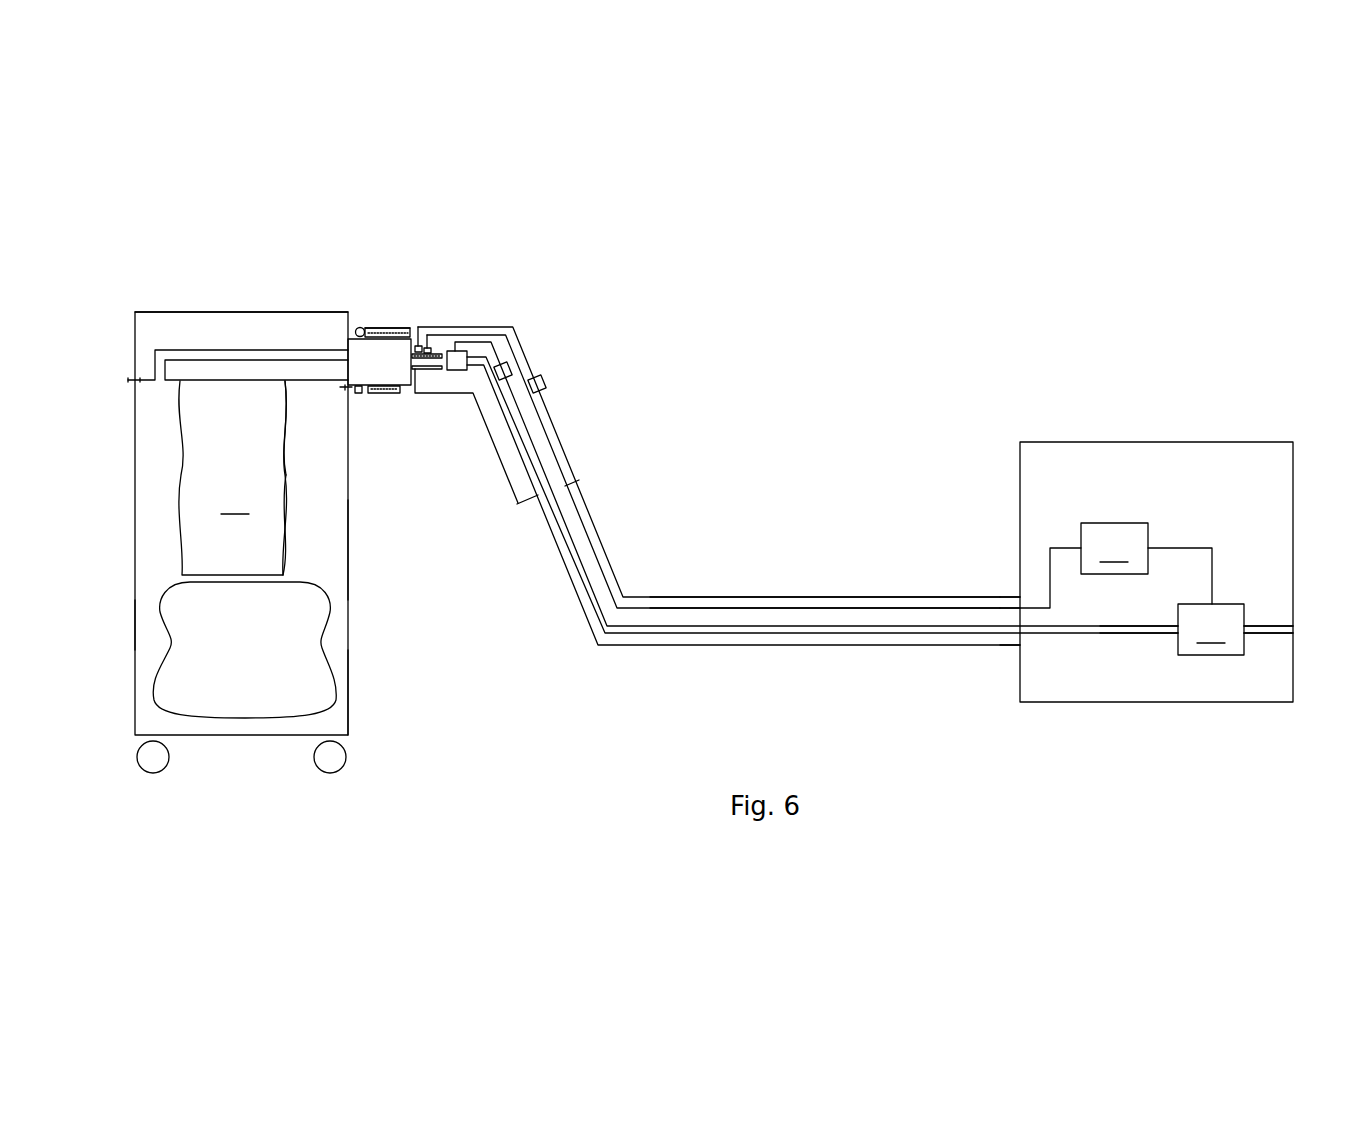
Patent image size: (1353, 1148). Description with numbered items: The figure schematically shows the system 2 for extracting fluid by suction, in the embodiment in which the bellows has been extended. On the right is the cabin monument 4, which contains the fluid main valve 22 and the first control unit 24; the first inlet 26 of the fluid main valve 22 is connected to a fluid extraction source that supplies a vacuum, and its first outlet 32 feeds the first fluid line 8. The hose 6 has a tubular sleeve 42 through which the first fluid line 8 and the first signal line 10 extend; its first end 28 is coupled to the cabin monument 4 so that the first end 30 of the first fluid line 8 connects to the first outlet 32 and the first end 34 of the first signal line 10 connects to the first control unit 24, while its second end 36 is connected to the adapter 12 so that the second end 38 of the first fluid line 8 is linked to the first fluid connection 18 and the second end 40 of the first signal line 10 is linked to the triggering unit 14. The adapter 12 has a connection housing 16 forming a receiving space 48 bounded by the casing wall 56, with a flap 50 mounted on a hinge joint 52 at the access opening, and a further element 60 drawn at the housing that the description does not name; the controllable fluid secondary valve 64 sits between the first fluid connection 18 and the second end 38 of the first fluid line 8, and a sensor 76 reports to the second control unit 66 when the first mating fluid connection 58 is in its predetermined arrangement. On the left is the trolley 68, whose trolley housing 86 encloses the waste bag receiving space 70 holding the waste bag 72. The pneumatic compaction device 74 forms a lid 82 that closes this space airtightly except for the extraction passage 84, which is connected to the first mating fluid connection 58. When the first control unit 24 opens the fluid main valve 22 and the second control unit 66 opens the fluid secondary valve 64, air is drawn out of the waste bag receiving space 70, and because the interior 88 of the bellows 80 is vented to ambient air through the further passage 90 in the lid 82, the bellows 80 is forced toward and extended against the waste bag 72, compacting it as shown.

The system 2 is at (1006, 248).
The cabin monument 4 is at (1258, 402).
The hose 6 is at (784, 580).
The first fluid line 8 is at (780, 636).
The first signal line 10 is at (822, 600).
The adapter 12 is at (519, 290).
The triggering unit 14 is at (544, 376).
The connection housing 16 is at (411, 328).
The first fluid connection 18 is at (416, 372).
The fluid main valve 22 is at (1211, 629).
The first control unit 24 is at (1114, 548).
The first inlet 26 is at (1249, 615).
The first end of the hose 28 is at (1014, 590).
The first end of the first fluid line 30 is at (1013, 642).
The first outlet 32 is at (1174, 637).
The first end of the first signal line 34 is at (1014, 612).
The second end of the hose 36 is at (587, 484).
The second end of the first fluid line 38 is at (521, 505).
The second end of the first signal line 40 is at (543, 488).
The tubular sleeve 42 is at (724, 590).
The receiving space 48 is at (384, 395).
The flap 50 is at (400, 326).
The hinge joint 52 is at (359, 326).
The casing wall 56 is at (407, 395).
The first mating fluid connection 58 is at (420, 344).
The retainer 60 is at (373, 326).
The fluid secondary valve 64 is at (459, 374).
The second control unit 66 is at (509, 364).
The trolley 68 is at (378, 728).
The waste bag receiving space 70 is at (334, 573).
The waste bag 72 is at (328, 662).
The compaction device 74 is at (133, 326).
The sensor 76 is at (432, 345).
The bellows 80 is at (290, 488).
The lid 82 is at (312, 386).
The extraction passage 84 is at (160, 386).
The trolley housing 86 is at (352, 548).
The interior of the bellows 88 is at (233, 478).
The further passage 90 is at (242, 386).